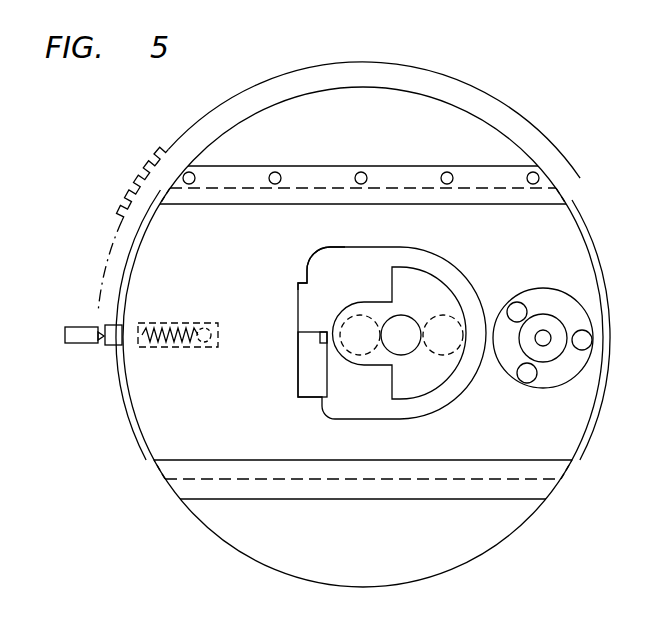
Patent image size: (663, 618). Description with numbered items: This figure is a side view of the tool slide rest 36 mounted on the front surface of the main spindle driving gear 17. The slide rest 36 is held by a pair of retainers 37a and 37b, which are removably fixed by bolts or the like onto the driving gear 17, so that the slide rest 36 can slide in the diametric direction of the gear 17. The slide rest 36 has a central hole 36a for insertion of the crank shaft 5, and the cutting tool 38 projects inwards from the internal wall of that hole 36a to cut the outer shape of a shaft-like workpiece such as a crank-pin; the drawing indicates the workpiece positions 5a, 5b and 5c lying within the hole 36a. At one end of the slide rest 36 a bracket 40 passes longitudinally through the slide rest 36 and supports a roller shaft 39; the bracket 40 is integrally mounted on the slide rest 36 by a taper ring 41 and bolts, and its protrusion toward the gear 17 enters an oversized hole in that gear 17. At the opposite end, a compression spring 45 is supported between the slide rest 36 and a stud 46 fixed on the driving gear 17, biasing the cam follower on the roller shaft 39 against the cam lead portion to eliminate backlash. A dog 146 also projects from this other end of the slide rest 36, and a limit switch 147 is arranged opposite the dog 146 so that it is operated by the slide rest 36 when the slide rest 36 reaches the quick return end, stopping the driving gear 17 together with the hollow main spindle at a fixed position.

The cam housing 5 is at (424, 387).
The center cam opening 5a is at (398, 345).
The cam position #1P/#4P 5b is at (456, 350).
The cam position #2P/#3P 5c is at (358, 352).
The main spindle driving gear 17 is at (462, 556).
The tool slide rest 36 is at (140, 263).
The hole 36a is at (325, 262).
The retainer 37a is at (408, 176).
The retainer 37b is at (375, 492).
The cutting tool 38 is at (324, 333).
The roller shaft 39 is at (542, 334).
The bracket 40 is at (548, 323).
The taper ring 41 is at (505, 325).
The compression spring 45 is at (165, 348).
The stud 46 is at (218, 338).
The dog 146 is at (113, 345).
The limit switch 147 is at (78, 340).